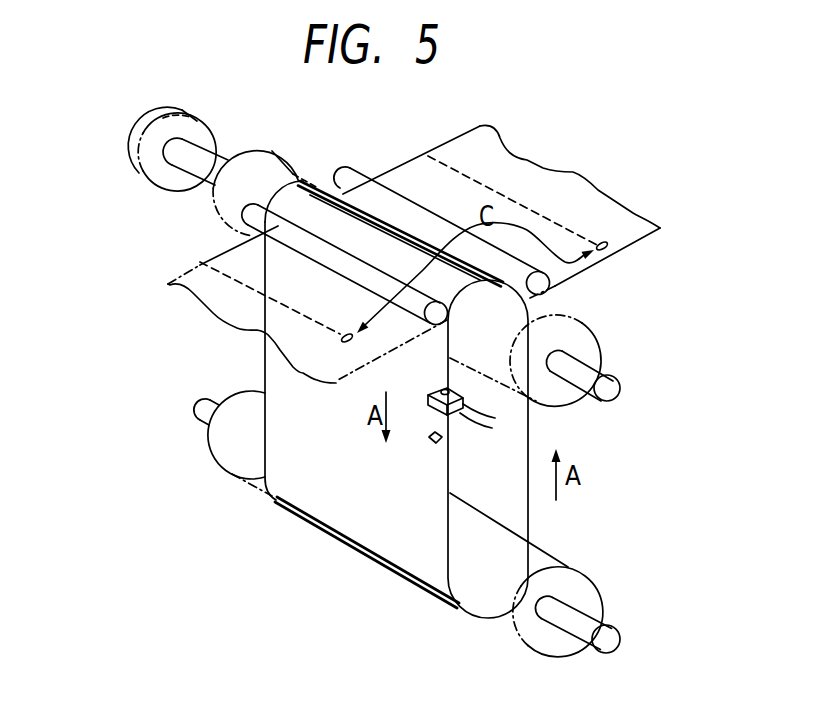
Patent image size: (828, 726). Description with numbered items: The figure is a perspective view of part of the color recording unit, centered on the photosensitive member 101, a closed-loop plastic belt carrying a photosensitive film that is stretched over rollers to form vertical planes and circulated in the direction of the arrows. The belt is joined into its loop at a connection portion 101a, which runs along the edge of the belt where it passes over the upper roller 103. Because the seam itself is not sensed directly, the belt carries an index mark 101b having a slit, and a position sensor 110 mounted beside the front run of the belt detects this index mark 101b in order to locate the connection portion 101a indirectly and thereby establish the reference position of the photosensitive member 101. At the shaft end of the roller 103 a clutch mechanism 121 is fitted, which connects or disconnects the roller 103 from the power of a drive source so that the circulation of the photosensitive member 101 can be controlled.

The photosensitive member 101 is at (528, 521).
The connection portion 101a is at (332, 200).
The index mark 101b is at (442, 437).
The roller 103 is at (593, 365).
The position sensor 110 is at (437, 392).
The clutch mechanism 121 is at (142, 168).